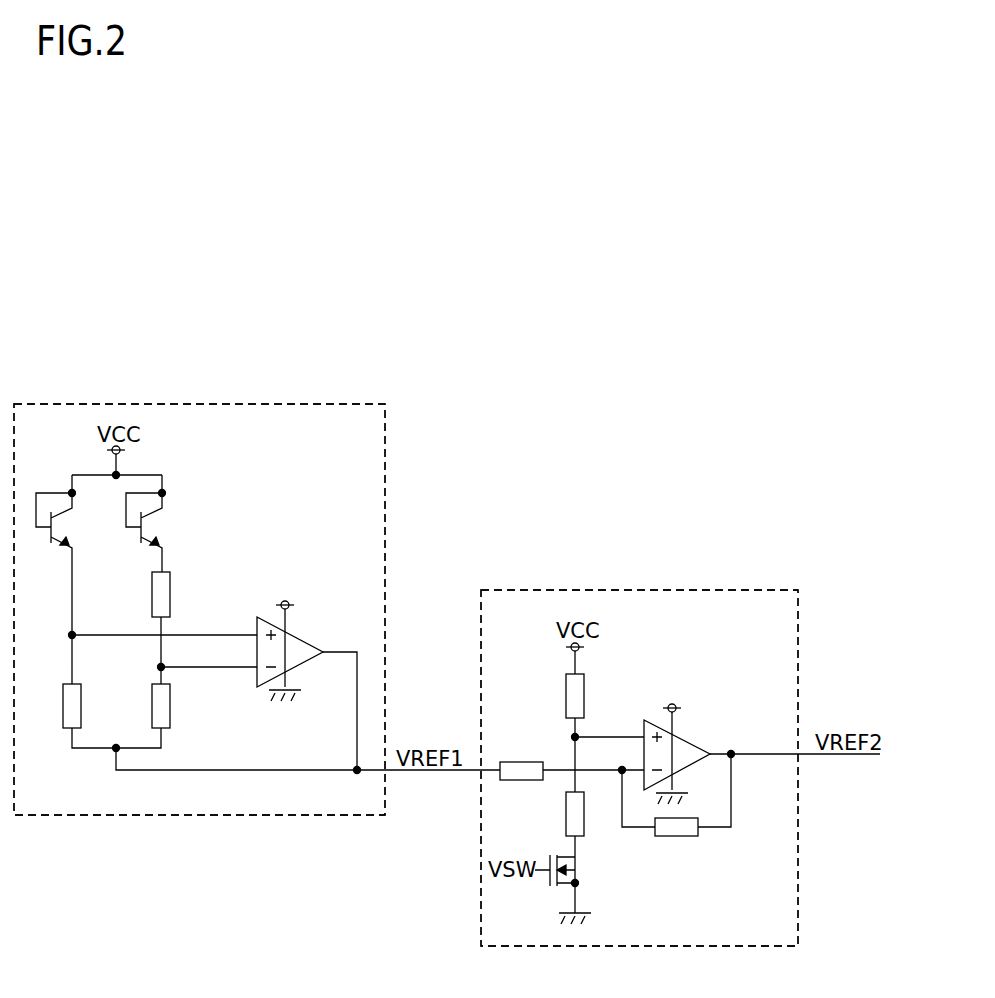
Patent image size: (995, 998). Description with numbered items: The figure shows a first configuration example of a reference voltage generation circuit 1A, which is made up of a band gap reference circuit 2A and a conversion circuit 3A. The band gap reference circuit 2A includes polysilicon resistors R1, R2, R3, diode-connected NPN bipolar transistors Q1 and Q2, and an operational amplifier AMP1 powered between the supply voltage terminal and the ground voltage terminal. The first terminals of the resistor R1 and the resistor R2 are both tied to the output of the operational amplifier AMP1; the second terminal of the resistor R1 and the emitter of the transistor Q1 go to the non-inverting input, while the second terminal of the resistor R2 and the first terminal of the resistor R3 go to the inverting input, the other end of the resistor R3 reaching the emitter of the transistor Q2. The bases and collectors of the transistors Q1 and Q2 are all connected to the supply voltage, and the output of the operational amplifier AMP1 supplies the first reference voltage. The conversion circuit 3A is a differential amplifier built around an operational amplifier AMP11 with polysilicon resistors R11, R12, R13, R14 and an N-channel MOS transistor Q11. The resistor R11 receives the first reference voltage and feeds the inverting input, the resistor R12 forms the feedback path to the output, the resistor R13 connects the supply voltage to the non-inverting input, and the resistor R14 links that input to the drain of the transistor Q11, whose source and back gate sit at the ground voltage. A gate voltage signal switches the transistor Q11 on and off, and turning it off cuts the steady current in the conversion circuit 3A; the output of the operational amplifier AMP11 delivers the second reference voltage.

The reference voltage generation circuit 1A is at (454, 306).
The band gap reference circuit 2A is at (197, 404).
The conversion circuit 3A is at (640, 590).
The NPN bipolar transistor Q1 is at (78, 528).
The NPN bipolar transistor Q2 is at (168, 528).
The resistor R1 is at (83, 707).
The resistor R2 is at (172, 707).
The resistor R3 is at (172, 597).
The operational amplifier AMP1 is at (305, 641).
The resistor R11 is at (525, 762).
The resistor R12 is at (673, 837).
The resistor R13 is at (565, 696).
The resistor R14 is at (565, 810).
The N-channel MOS transistor Q11 is at (586, 871).
The operational amplifier AMP11 is at (694, 748).